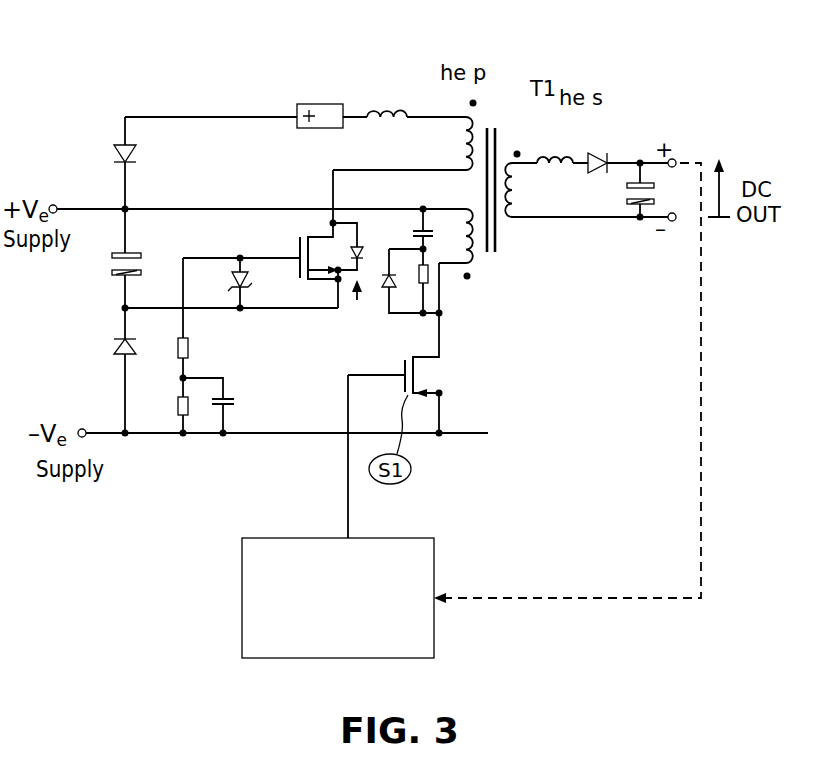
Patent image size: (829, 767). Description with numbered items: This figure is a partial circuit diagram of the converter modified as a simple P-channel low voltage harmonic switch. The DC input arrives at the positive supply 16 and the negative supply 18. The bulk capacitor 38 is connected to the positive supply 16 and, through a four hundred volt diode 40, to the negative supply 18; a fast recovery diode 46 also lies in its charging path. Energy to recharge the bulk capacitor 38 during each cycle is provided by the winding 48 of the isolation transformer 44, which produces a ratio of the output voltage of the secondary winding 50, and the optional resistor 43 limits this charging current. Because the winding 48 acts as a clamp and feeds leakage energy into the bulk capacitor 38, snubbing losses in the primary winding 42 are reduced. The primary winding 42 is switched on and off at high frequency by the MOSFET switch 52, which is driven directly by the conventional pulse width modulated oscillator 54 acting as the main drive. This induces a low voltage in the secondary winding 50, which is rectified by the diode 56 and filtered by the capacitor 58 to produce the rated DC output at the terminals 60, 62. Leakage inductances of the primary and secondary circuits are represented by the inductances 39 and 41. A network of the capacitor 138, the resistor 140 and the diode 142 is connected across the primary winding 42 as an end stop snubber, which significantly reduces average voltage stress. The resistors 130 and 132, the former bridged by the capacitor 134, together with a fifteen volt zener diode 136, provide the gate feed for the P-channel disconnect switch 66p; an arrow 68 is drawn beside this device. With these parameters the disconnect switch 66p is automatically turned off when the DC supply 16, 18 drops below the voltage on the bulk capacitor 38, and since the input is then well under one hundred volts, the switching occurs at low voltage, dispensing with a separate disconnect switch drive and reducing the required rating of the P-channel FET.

The positive supply 16 is at (52, 204).
The negative supply 18 is at (83, 428).
The bulk capacitor 38 is at (110, 268).
The leakage inductance 39 is at (393, 110).
The diode 40 is at (115, 346).
The leakage inductance 41 is at (553, 156).
The primary winding 42 is at (471, 262).
The resistor 43 is at (318, 104).
The isolation transformer 44 is at (506, 112).
The diode 46 is at (116, 150).
The winding 48 is at (462, 132).
The secondary winding 50 is at (518, 179).
The MOSFET switch 52 is at (433, 374).
The pulse width modulated oscillator 54 is at (435, 560).
The diode 56 is at (606, 156).
The capacitor 58 is at (628, 195).
The terminal 60 is at (675, 158).
The terminal 62 is at (674, 223).
The disconnect switch 66p is at (296, 246).
The current direction arrow 68 is at (356, 312).
The resistor 130 is at (177, 412).
The resistor 132 is at (190, 348).
The capacitor 134 is at (228, 406).
The zener diode 136 is at (233, 272).
The capacitor 138 is at (411, 227).
The resistor 140 is at (428, 272).
The diode 142 is at (394, 287).